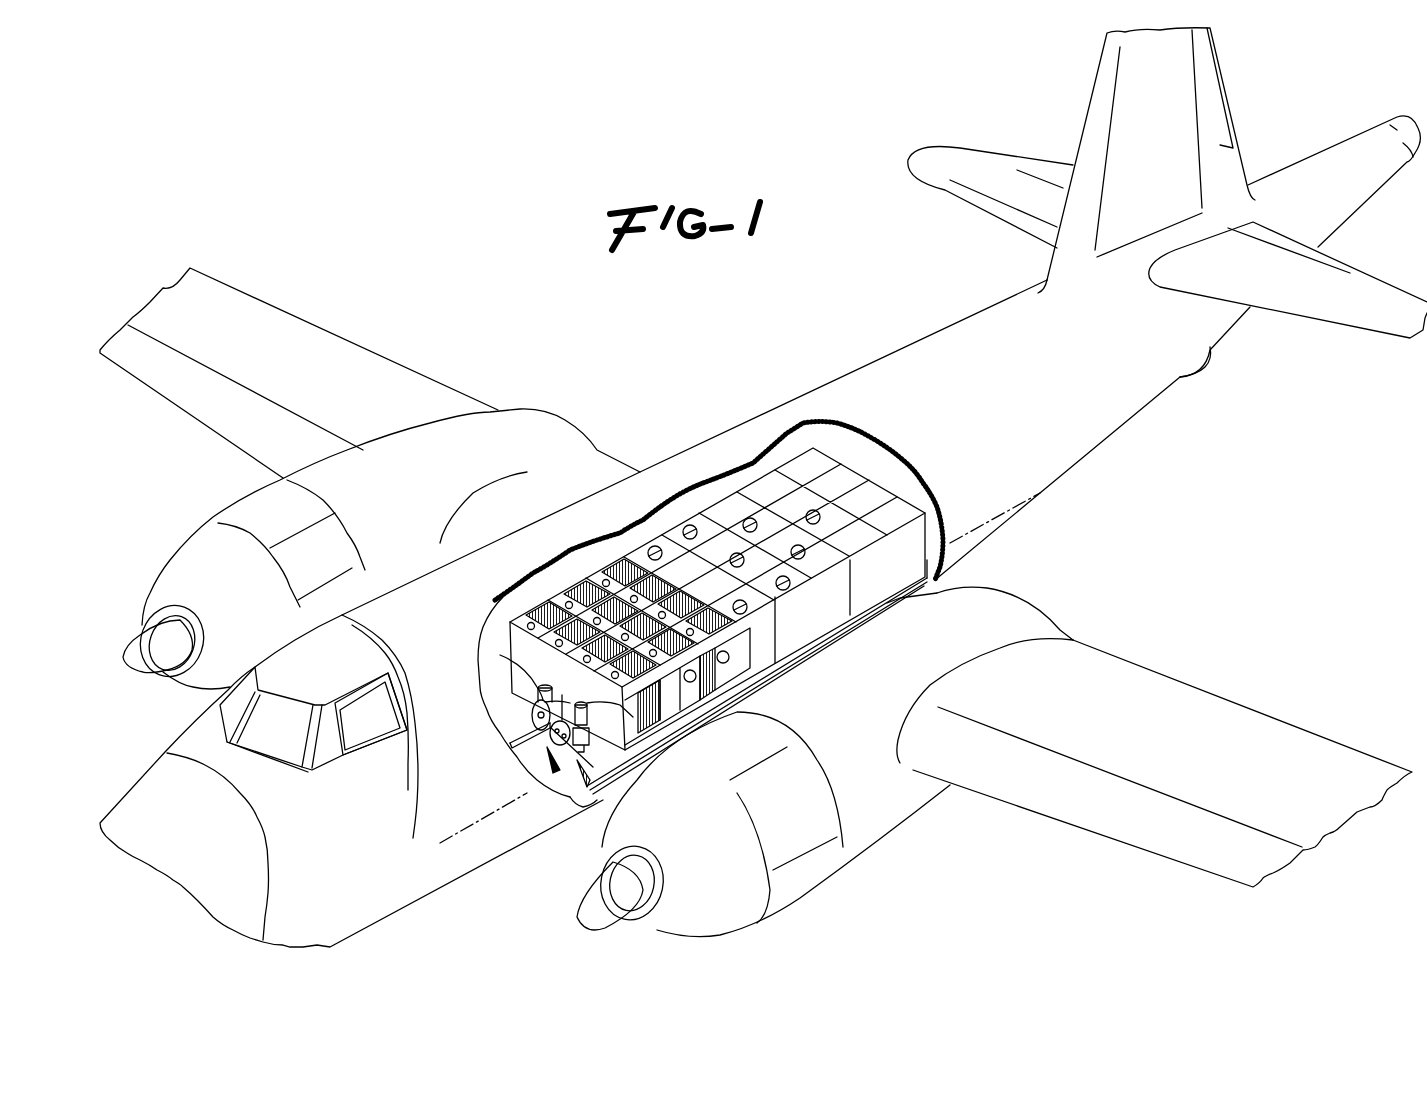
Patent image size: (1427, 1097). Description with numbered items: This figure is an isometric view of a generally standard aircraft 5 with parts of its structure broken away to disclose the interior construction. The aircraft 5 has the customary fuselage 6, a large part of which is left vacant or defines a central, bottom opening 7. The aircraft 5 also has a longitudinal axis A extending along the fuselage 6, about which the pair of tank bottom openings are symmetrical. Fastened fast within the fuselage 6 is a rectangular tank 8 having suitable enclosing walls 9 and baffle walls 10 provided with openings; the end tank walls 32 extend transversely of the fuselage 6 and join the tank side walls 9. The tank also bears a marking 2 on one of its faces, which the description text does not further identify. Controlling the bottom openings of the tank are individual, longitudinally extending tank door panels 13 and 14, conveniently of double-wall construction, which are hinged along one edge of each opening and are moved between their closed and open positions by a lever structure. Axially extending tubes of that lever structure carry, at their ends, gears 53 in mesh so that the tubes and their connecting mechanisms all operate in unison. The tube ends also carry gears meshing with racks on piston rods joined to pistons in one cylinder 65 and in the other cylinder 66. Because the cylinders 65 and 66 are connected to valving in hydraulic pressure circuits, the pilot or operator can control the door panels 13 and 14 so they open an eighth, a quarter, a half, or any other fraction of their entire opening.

The battery module 2 is at (812, 609).
The aircraft 5 is at (778, 404).
The fuselage 6 is at (925, 342).
The central, bottom opening 7 is at (567, 807).
The rectangular tank 8 is at (717, 580).
The enclosing walls 9 is at (573, 588).
The baffle walls 10 is at (645, 580).
The tank door panel 13 is at (543, 757).
The tank door panel 14 is at (597, 780).
The end tank walls 32 is at (513, 683).
The gears 53 is at (557, 712).
The cylinder 65 is at (601, 714).
The cylinder 66 is at (509, 666).
The longitudinal axis A is at (507, 805).